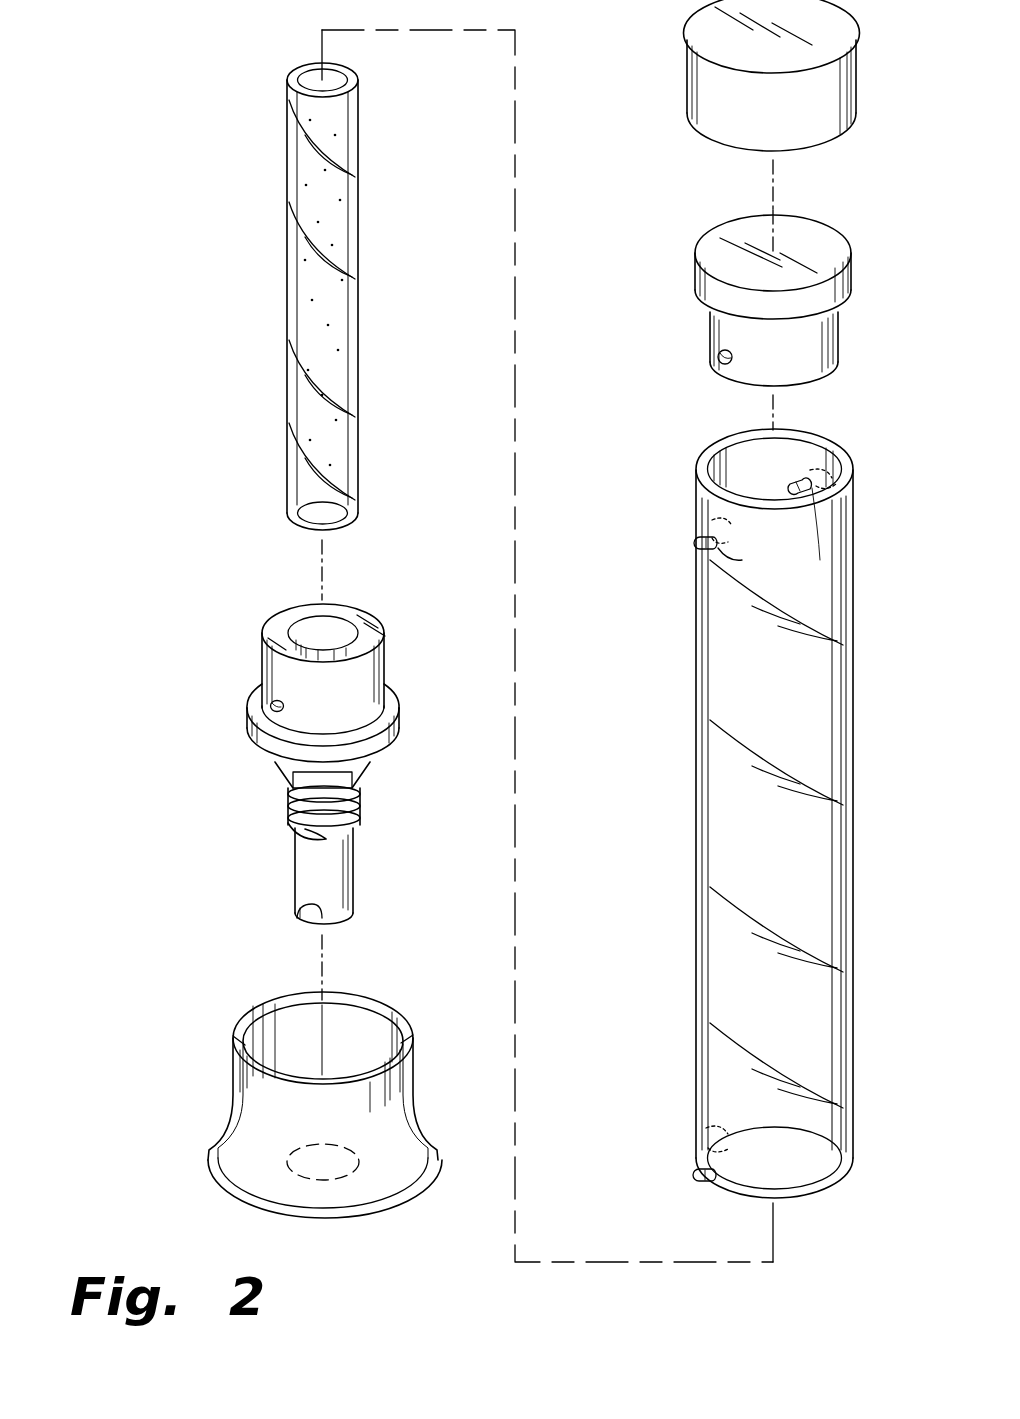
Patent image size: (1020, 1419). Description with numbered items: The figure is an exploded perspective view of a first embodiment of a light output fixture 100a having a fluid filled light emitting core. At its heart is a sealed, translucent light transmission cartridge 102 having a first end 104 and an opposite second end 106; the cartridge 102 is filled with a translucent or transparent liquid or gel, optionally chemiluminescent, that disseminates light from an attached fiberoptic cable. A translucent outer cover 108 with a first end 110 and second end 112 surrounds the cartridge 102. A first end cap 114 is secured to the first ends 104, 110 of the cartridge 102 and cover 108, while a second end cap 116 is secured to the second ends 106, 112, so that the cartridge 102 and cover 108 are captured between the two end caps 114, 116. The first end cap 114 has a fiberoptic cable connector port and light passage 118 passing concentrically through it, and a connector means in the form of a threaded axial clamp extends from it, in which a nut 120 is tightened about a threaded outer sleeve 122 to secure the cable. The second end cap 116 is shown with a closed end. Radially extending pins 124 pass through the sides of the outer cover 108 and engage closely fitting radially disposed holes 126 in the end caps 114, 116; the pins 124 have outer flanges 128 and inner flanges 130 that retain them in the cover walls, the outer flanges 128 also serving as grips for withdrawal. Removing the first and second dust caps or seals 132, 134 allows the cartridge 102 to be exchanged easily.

The light output fixture 100a is at (150, 1065).
The light transmission cartridge 102 is at (286, 82).
The first end 104 is at (322, 516).
The second end 106 is at (322, 80).
The outer cover 108 is at (695, 735).
The first end 110 is at (700, 1145).
The second end 112 is at (699, 455).
The first end cap 114 is at (256, 705).
The second end cap 116 is at (700, 258).
The fiberoptic cable connector port and light passage 118 is at (336, 625).
The nut 120 is at (282, 778).
The outer sleeve 122 is at (293, 866).
The pins 124 is at (740, 559).
The holes 126 is at (720, 360).
The outer flanges 128 is at (695, 543).
The inner flanges 130 is at (735, 512).
The first dust cap 132 is at (404, 1205).
The second dust cap 134 is at (688, 80).